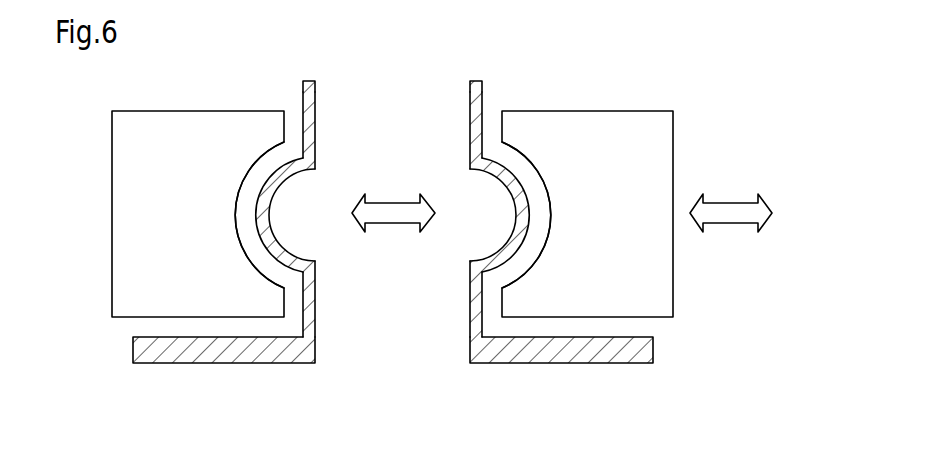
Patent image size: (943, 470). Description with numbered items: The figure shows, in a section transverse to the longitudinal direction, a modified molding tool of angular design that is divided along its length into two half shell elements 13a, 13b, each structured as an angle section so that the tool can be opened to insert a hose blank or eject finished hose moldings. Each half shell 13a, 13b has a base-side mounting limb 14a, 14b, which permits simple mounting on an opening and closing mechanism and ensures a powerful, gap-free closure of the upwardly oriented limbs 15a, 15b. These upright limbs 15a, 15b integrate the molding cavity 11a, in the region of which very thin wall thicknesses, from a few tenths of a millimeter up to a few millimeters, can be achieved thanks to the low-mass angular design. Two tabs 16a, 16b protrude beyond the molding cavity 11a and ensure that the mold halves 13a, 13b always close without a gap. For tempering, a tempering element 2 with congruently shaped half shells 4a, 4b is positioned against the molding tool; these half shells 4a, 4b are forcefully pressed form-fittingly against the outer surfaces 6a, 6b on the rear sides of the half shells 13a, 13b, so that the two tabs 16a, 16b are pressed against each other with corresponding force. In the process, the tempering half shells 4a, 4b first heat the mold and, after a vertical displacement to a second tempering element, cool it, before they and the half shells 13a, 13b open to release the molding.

The tempering element 2 is at (658, 100).
The half shell of the tempering element 4a is at (177, 132).
The half shell of the tempering element 4b is at (611, 130).
The outer surface of the mold 6a is at (265, 250).
The outer surface of the mold 6b is at (526, 240).
The molding cavity 11a is at (268, 209).
The half shell element 13a is at (310, 80).
The half shell element 13b is at (473, 80).
The base-side mounting limb 14a is at (217, 350).
The base-side mounting limb 14b is at (576, 350).
The upwardly oriented limb 15a is at (315, 323).
The upwardly oriented limb 15b is at (470, 268).
The tab 16a is at (309, 103).
The tab 16b is at (477, 130).